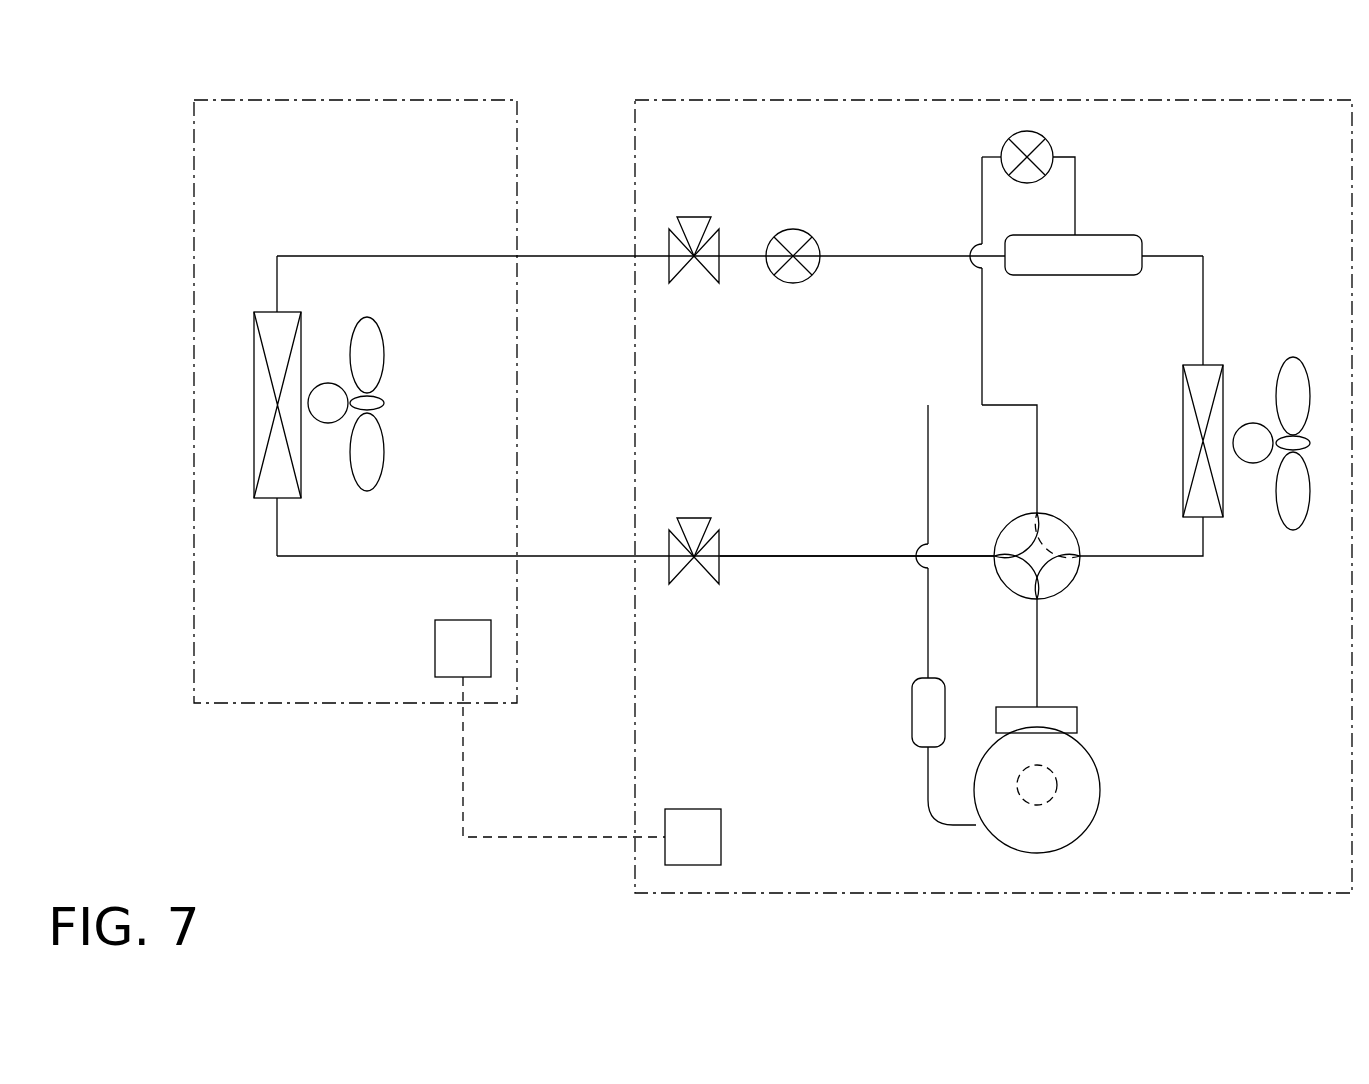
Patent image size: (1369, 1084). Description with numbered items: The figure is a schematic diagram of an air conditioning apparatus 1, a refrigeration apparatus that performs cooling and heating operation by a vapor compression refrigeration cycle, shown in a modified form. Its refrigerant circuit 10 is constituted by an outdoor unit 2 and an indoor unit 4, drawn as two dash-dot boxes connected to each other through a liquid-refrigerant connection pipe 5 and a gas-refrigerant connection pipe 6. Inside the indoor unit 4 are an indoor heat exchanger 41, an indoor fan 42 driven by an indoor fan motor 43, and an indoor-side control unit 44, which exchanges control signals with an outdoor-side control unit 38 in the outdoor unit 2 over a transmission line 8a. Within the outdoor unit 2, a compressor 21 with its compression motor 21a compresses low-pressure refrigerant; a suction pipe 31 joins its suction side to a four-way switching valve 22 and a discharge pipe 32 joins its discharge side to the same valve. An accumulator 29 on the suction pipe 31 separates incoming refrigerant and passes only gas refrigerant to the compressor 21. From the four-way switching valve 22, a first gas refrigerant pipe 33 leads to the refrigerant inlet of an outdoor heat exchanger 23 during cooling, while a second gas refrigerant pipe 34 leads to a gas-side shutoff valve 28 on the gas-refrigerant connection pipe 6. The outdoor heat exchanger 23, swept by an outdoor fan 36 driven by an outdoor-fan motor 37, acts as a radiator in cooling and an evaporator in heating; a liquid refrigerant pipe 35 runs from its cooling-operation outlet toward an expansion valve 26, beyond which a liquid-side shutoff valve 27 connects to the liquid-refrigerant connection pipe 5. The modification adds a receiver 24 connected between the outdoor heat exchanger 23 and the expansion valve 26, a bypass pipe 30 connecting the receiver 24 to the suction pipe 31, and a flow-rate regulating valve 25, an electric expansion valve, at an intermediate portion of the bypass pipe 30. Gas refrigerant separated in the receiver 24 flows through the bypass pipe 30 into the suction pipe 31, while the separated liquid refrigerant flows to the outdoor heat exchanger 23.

The air conditioning apparatus 1 is at (158, 116).
The outdoor unit 2 is at (795, 100).
The indoor unit 4 is at (452, 98).
The liquid-refrigerant connection pipe 5 is at (578, 252).
The gas-refrigerant connection pipe 6 is at (578, 552).
The transmission line 8a is at (548, 842).
The refrigerant circuit 10 is at (880, 208).
The compressor 21 is at (1093, 785).
The compression motor 21a is at (1050, 800).
The four-way switching valve 22 is at (1018, 525).
The outdoor heat exchanger 23 is at (1188, 412).
The receiver 24 is at (1098, 235).
The flow-rate regulating valve 25 is at (1005, 150).
The expansion valve 26 is at (792, 238).
The liquid-side shutoff valve 27 is at (707, 264).
The gas-side shutoff valve 28 is at (705, 565).
The accumulator 29 is at (925, 712).
The bypass pipe 30 is at (980, 320).
The suction pipe 31 is at (925, 778).
The discharge pipe 32 is at (1045, 632).
The first gas refrigerant pipe 33 is at (1188, 564).
The second gas refrigerant pipe 34 is at (785, 565).
The liquid refrigerant pipe 35 is at (1208, 290).
The outdoor fan 36 is at (1300, 512).
The outdoor-fan motor 37 is at (1253, 460).
The outdoor-side control unit 38 is at (705, 820).
The indoor heat exchanger 41 is at (268, 320).
The indoor fan 42 is at (373, 340).
The indoor fan motor 43 is at (326, 420).
The indoor-side control unit 44 is at (440, 660).